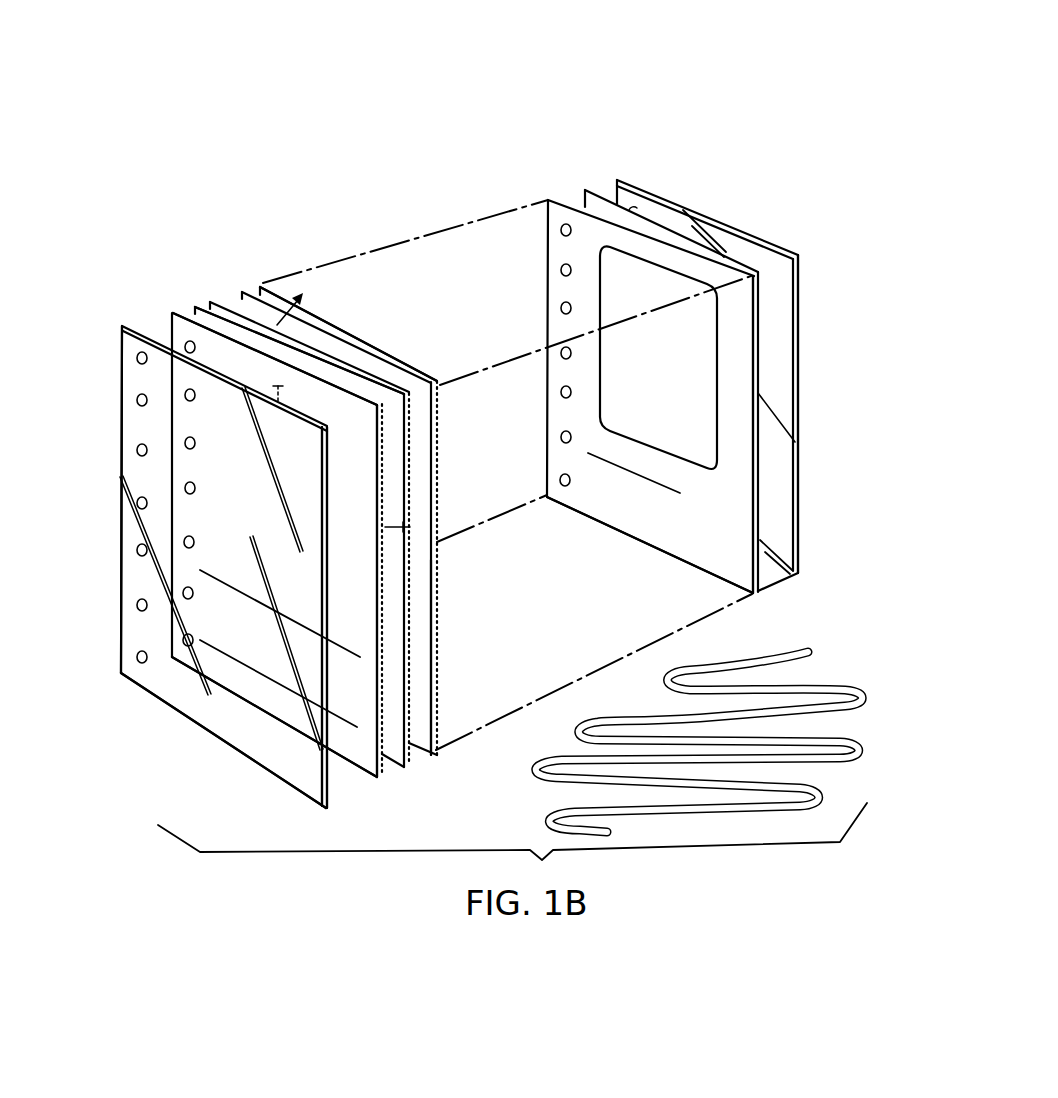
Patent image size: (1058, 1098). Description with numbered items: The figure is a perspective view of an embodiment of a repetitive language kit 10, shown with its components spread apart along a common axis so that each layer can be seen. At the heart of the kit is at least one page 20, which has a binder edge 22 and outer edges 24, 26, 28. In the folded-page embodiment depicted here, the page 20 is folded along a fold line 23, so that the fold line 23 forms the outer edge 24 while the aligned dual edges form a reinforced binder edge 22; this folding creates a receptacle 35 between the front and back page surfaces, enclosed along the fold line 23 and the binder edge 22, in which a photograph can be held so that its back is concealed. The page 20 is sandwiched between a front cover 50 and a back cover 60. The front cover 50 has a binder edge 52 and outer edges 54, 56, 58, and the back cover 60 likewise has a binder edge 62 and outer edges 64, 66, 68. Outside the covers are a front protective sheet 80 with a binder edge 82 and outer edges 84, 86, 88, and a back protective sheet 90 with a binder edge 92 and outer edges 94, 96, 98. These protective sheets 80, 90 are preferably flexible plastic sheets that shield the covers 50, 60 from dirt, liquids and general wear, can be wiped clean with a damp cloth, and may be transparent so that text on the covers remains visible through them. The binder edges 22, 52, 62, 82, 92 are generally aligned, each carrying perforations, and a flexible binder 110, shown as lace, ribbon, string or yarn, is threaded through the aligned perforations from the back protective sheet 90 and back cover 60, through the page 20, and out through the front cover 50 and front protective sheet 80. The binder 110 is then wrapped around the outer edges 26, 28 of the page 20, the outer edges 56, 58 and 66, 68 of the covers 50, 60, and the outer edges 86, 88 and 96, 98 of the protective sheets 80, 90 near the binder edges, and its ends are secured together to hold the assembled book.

The repetitive language kit 10 is at (612, 52).
The page 20 is at (257, 292).
The binder edge 22 is at (203, 298).
The fold line 23 is at (440, 598).
The outer edge 24 is at (440, 455).
The outer edge 26 is at (352, 334).
The outer edge 28 is at (428, 755).
The receptacle 35 is at (306, 305).
The front cover 50 is at (170, 313).
The binder edge 52 is at (170, 328).
The outer edge 54 is at (380, 560).
The outer edge 56 is at (274, 386).
The outer edge 58 is at (347, 767).
The back cover 60 is at (546, 196).
The binder edge 62 is at (548, 297).
The outer edge 64 is at (752, 452).
The outer edge 66 is at (602, 247).
The outer edge 68 is at (614, 533).
The front protective sheet 80 is at (122, 472).
The binder edge 82 is at (123, 626).
The outer edge 84 is at (322, 770).
The outer edge 86 is at (218, 383).
The outer edge 88 is at (200, 730).
The back protective sheet 90 is at (620, 176).
The binder edge 92 is at (612, 188).
The outer edge 94 is at (800, 397).
The outer edge 96 is at (720, 222).
The outer edge 98 is at (775, 563).
The binder 110 is at (852, 746).